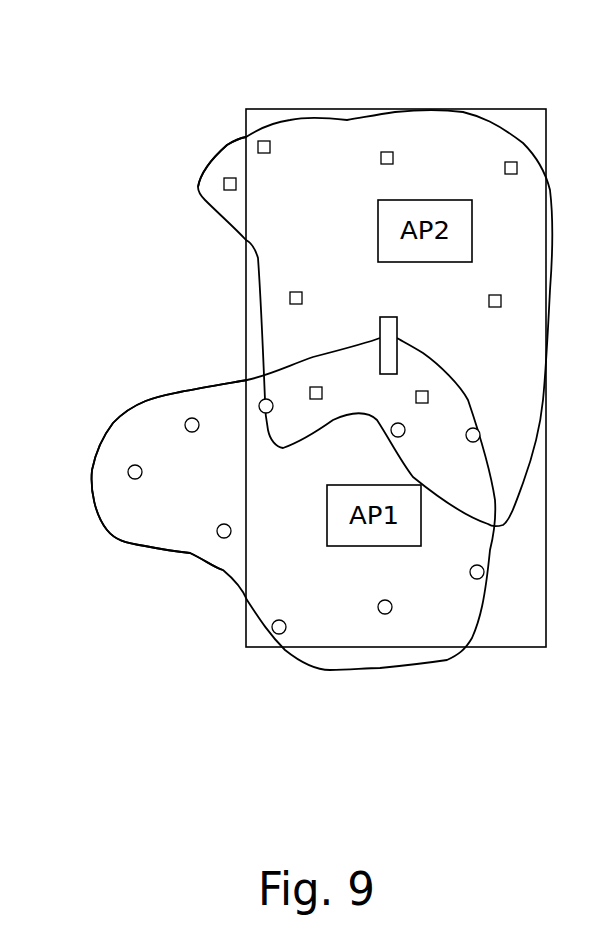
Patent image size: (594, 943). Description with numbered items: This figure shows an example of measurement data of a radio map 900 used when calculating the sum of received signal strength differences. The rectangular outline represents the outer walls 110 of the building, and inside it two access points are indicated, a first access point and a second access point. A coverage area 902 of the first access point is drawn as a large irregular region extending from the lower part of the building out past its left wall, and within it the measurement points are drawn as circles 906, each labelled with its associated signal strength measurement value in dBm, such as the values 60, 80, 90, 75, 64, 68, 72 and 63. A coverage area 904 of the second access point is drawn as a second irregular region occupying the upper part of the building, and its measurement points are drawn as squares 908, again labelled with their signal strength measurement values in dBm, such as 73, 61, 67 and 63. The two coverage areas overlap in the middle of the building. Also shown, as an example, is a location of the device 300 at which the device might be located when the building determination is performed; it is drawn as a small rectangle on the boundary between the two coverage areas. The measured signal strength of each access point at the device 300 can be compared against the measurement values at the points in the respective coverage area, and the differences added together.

The outer walls 110 is at (522, 108).
The heat map diagram 900 is at (160, 261).
The coverage area of the first access point 902 is at (380, 668).
The coverage area of the second access point 904 is at (200, 172).
The measurement points (circles) 906 is at (183, 423).
The measurement points (squares) 908 is at (257, 143).
The device 300 is at (386, 317).
The sensor node with signal strength - 73 is at (280, 145).
The sensor node with signal strength - 90 is at (182, 333).
The sensor node with signal strength - 61 is at (402, 158).
The sensor node with signal strength - 67 is at (403, 271).
The sensor node with signal strength - 63 is at (455, 452).
The sensor node with signal strength - 60 is at (280, 405).
The sensor node with signal strength - 80 is at (206, 422).
The sensor node with signal strength - 75 is at (220, 520).
The sensor node with signal strength - 64 is at (392, 419).
The sensor node with signal strength - 68 is at (460, 503).
The sensor node with signal strength - 72 is at (282, 616).